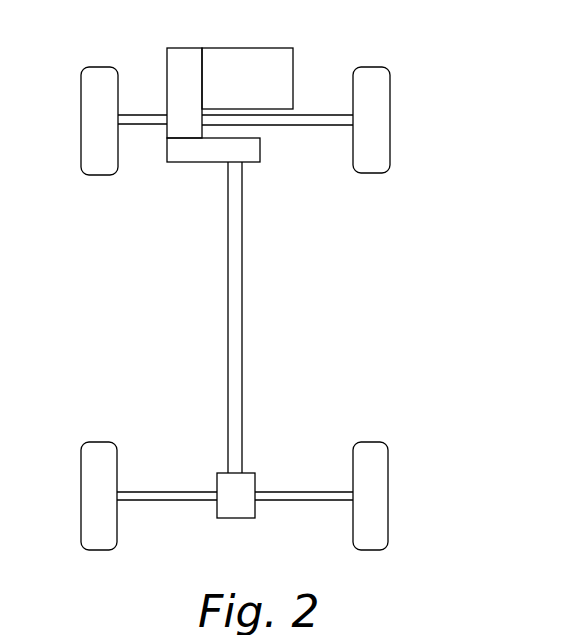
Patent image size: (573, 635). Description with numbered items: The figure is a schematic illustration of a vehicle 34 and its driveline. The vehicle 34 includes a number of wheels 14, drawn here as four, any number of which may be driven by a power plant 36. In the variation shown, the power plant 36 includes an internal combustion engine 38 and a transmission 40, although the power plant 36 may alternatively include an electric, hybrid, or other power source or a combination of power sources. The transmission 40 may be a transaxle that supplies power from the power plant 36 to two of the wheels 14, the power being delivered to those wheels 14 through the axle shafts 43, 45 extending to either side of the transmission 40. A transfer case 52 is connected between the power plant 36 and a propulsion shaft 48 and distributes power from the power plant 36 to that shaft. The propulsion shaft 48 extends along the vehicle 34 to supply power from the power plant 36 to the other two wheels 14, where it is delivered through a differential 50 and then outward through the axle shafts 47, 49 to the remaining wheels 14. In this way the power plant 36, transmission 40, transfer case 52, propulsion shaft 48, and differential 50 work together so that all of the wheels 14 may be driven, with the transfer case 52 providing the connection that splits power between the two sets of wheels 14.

The wheels 14 is at (87, 70).
The vehicle 34 is at (452, 95).
The power plant 36 is at (262, 72).
The internal combustion engine 38 is at (288, 70).
The transmission 40 is at (188, 73).
The axle shaft 43 is at (143, 115).
The axle shaft 45 is at (312, 125).
The axle shaft 47 is at (167, 490).
The propulsion shaft 48 is at (242, 322).
The axle shaft 49 is at (303, 490).
The differential 50 is at (233, 508).
The transfer case 52 is at (195, 152).